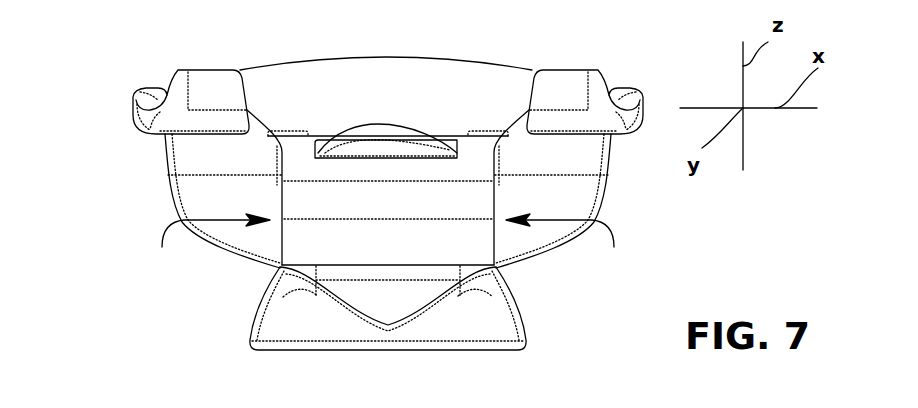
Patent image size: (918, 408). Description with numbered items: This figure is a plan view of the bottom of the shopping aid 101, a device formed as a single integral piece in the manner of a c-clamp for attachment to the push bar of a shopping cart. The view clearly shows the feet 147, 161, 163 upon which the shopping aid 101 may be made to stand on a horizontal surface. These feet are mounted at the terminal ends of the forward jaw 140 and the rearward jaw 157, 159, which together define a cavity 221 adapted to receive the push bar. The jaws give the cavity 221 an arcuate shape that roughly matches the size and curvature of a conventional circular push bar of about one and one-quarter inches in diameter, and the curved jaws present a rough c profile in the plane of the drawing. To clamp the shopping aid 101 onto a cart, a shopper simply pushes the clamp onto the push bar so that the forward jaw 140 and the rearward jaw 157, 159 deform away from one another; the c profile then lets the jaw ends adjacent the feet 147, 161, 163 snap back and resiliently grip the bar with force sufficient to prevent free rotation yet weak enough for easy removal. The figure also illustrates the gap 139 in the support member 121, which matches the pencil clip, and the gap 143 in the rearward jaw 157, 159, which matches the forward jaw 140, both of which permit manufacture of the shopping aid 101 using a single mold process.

The shopping aid 101 is at (381, 199).
The support member 121 is at (333, 96).
The gap 139 is at (376, 125).
The forward jaw 140 is at (416, 326).
The gap 143 is at (385, 57).
The foot 147 is at (385, 304).
The rear jaw 157 is at (133, 122).
The rear jaw 159 is at (622, 136).
The foot 161 is at (188, 95).
The foot 163 is at (594, 114).
The cavity 221 is at (386, 244).